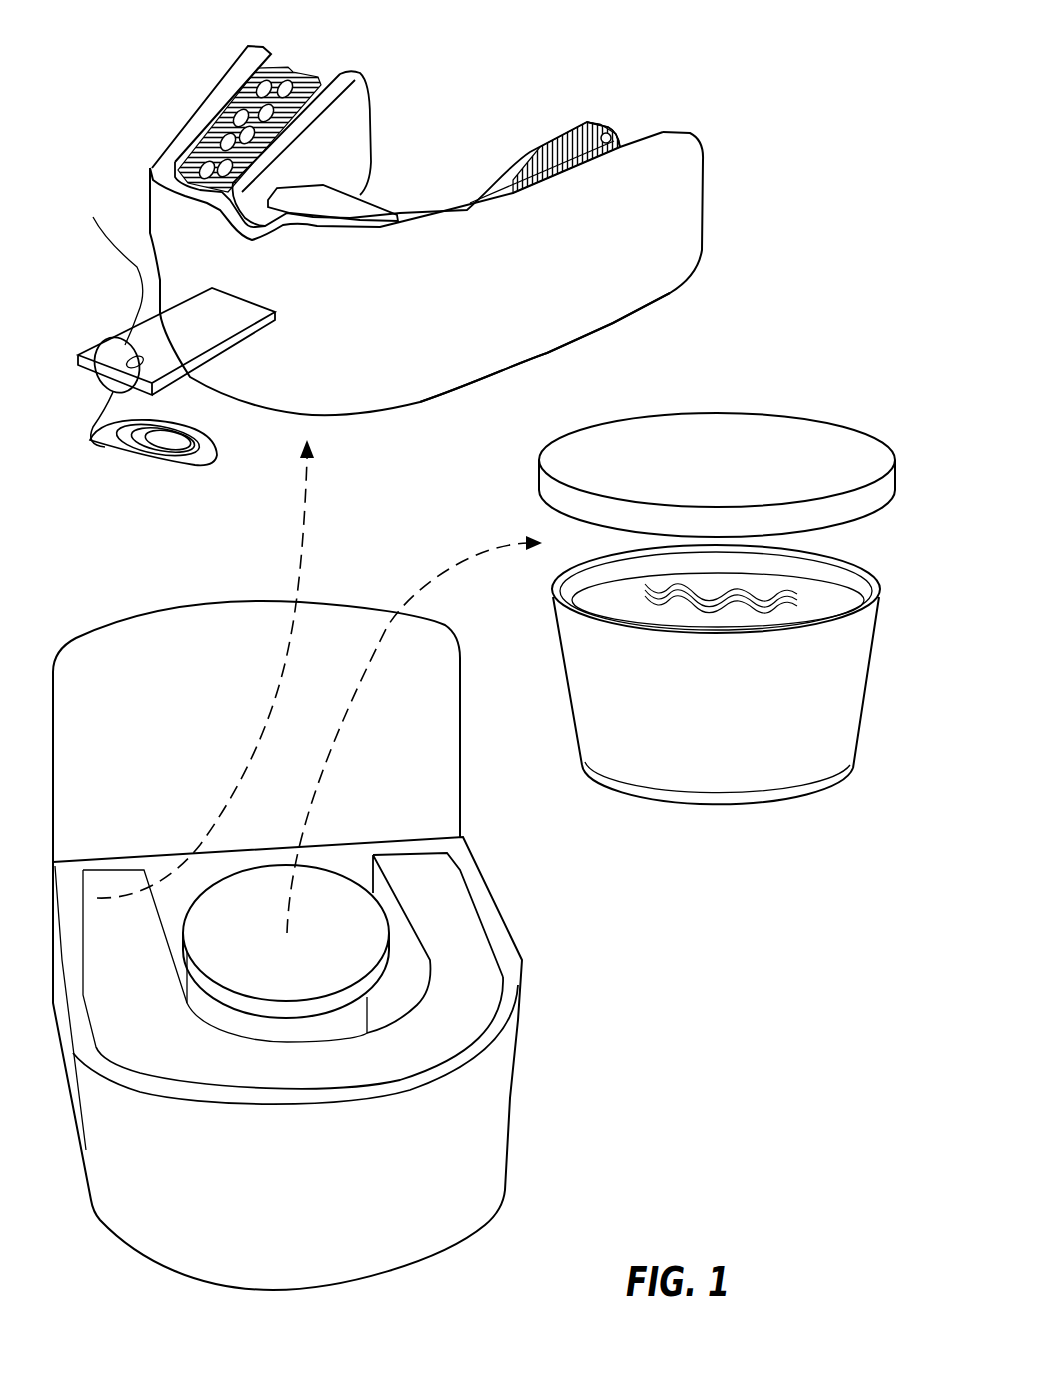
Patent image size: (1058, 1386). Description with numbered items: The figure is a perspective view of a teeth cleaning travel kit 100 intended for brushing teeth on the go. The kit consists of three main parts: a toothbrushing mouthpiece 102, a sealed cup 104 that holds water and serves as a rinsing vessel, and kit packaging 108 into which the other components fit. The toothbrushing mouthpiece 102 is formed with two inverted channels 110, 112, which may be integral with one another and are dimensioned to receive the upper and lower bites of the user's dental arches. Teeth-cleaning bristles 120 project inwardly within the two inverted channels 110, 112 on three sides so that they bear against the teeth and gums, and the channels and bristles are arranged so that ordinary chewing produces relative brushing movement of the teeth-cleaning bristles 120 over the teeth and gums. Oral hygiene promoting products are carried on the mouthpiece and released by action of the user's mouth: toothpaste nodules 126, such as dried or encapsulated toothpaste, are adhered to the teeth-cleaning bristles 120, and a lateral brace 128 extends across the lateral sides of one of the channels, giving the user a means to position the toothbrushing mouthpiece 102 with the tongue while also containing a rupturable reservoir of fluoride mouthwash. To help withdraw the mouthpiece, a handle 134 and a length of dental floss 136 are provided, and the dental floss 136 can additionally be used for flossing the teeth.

The teeth cleaning travel kit 100 is at (742, 56).
The toothbrushing mouthpiece 102 is at (703, 263).
The sealed cup 104 is at (660, 853).
The kit packaging 108 is at (500, 1108).
The inverted channel 110 is at (659, 100).
The inverted channel 112 is at (609, 333).
The teeth-cleaning bristles 120 is at (312, 72).
The toothpaste nodules 126 is at (262, 91).
The lateral brace 128 is at (313, 184).
The handle 134 is at (174, 317).
The dental floss 136 is at (117, 460).